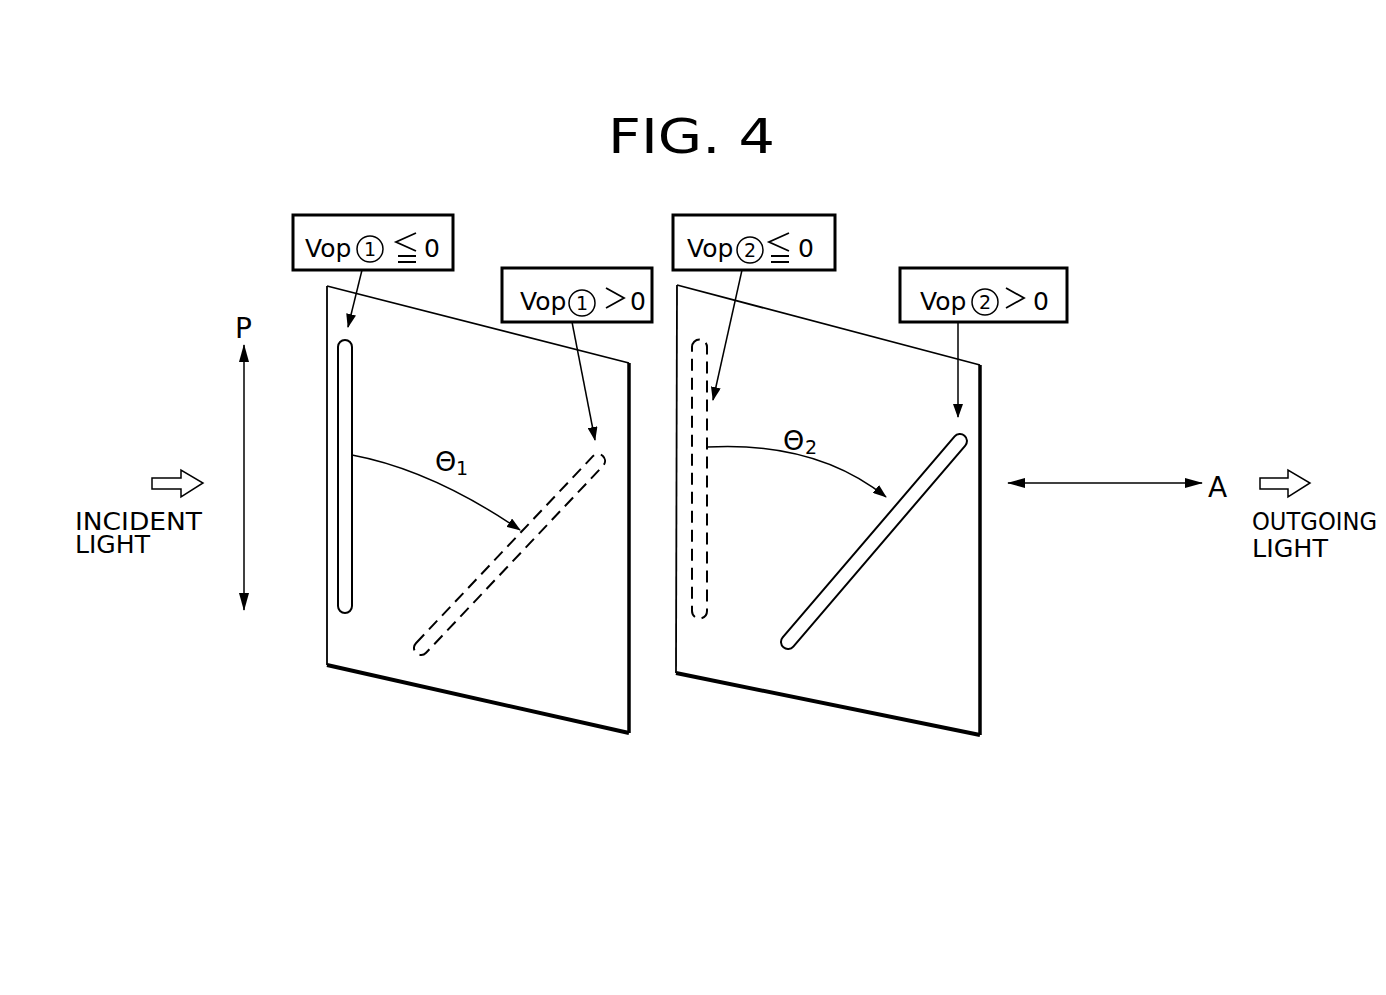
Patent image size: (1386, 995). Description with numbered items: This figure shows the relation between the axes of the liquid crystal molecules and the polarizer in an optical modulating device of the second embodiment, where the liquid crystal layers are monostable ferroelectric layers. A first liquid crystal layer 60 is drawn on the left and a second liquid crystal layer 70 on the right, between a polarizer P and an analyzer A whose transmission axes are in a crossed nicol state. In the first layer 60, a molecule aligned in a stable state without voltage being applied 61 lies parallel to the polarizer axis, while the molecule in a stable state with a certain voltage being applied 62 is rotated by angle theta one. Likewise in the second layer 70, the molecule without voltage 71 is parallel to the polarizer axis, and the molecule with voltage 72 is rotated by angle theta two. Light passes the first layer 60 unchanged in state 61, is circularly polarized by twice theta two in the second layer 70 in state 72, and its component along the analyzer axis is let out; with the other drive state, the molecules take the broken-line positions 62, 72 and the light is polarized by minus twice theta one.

The first liquid crystal layer 60 is at (515, 690).
The liquid crystal molecule aligned in a stable state without voltage being applied 61 is at (335, 608).
The liquid crystal molecule in a stable state with a certain voltage being applied 62 is at (417, 641).
The second liquid crystal layer 70 is at (858, 688).
The liquid crystal molecule aligned in a stable state without voltage being applied 71 is at (688, 605).
The liquid crystal molecule in a stable state with a certain voltage being applied 72 is at (777, 635).